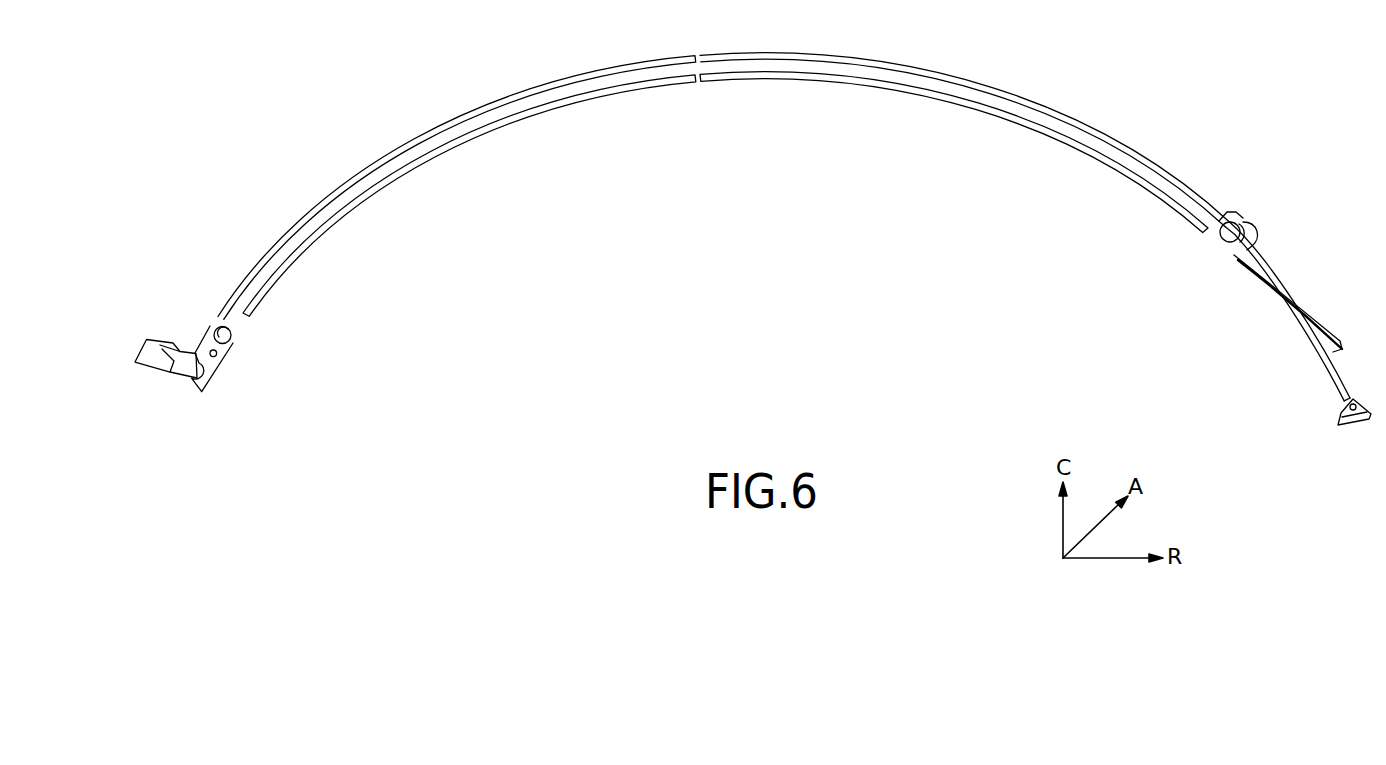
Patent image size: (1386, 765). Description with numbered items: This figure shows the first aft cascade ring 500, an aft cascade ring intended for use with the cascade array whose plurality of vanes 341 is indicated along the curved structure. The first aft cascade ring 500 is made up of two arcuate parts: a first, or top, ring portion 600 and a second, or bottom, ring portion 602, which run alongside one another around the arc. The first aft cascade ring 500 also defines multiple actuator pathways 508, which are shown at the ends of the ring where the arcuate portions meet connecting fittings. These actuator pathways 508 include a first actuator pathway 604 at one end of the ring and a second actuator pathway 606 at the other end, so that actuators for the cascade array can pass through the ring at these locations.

The first aft cascade ring 500 is at (334, 124).
The vanes 341 is at (452, 128).
The first ring portion 600 is at (315, 218).
The second ring portion 602 is at (354, 216).
The actuator pathways 508 is at (206, 322).
The first actuator pathway 604 is at (231, 339).
The second actuator pathway 606 is at (1228, 236).